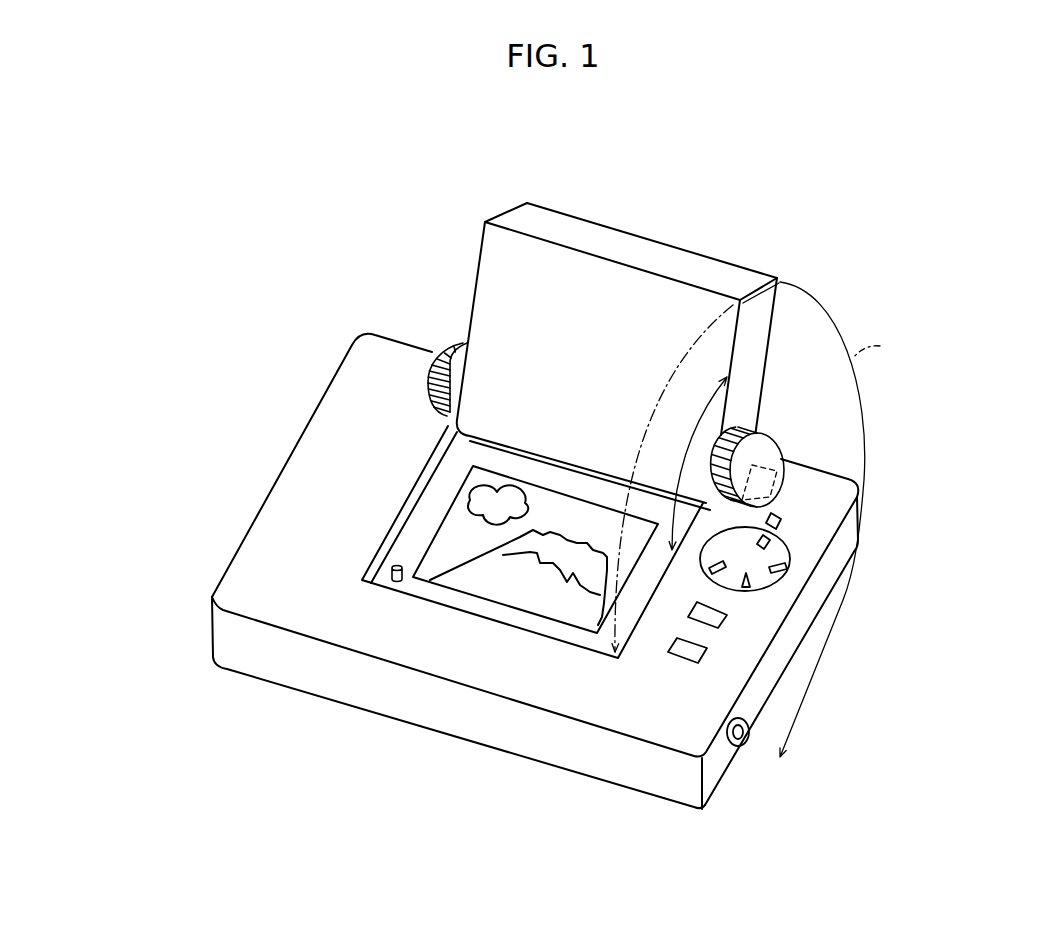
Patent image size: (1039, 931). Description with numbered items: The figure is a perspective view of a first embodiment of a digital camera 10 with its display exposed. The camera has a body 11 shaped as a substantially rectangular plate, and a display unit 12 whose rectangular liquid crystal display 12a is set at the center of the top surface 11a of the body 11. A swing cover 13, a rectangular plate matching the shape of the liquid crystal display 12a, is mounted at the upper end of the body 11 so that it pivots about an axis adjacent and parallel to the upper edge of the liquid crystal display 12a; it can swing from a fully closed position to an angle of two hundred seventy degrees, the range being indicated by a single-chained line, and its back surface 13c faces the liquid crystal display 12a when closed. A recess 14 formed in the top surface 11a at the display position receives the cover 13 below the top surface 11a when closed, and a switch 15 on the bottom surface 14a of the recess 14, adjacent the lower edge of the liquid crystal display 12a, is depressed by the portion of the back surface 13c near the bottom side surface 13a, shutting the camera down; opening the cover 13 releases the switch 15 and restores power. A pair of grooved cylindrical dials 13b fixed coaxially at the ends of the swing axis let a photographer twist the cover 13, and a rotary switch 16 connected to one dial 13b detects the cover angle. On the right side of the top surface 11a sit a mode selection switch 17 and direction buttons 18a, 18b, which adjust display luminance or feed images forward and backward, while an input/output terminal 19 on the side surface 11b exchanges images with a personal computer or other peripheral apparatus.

The digital camera 10 is at (905, 501).
The body 11 is at (566, 587).
The top surface 11a is at (285, 553).
The side surface 11b is at (832, 570).
The display unit 12 is at (440, 506).
The liquid crystal display 12a is at (480, 548).
The swing cover 13 is at (629, 336).
The bottom side surface 13a is at (580, 233).
The cylindrical dials 13b is at (448, 348).
The back surface 13c is at (668, 315).
The recess 14 is at (431, 456).
The bottom surface of the recess 14a is at (565, 635).
The switch 15 is at (392, 572).
The rotary switch 16 is at (777, 490).
The mode selection switch 17 is at (763, 575).
The upper direction button 18a is at (727, 617).
The lower direction button 18b is at (707, 653).
The input/output terminal 19 is at (732, 745).